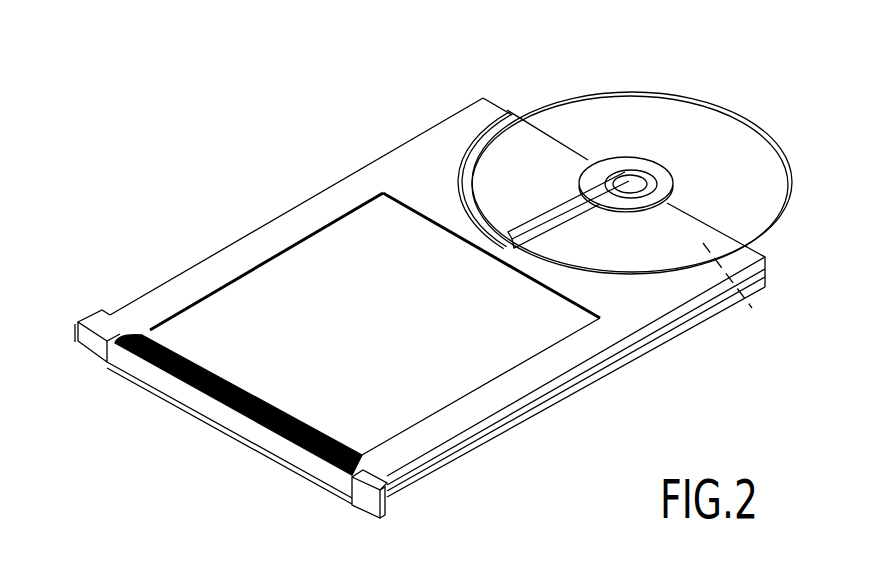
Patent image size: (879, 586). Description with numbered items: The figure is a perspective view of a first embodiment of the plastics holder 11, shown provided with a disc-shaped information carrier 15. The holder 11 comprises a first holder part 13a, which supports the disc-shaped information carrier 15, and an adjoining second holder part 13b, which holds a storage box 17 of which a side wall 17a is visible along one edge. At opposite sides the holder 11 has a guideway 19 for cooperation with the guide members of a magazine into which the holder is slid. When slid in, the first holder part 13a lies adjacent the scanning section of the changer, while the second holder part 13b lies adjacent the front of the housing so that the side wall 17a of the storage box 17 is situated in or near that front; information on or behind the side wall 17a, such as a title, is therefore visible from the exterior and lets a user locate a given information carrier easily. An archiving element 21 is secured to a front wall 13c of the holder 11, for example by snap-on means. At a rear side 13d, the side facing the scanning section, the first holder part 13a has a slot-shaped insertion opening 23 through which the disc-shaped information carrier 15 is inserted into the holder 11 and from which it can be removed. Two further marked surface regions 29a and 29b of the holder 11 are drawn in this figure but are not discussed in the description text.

The plastics holder 11 is at (600, 393).
The first holder part 13a is at (518, 150).
The second holder part 13b is at (327, 212).
The front wall 13c is at (383, 513).
The rear side 13d is at (493, 100).
The disc-shaped information carrier 15 is at (658, 115).
The storage box 17 is at (247, 358).
The side wall 17a is at (287, 453).
The guideway 19 is at (655, 335).
The archiving element 21 is at (377, 512).
The slot-shaped insertion opening 23 is at (735, 294).
The front margin 29a is at (473, 415).
The rear margin 29b is at (207, 277).